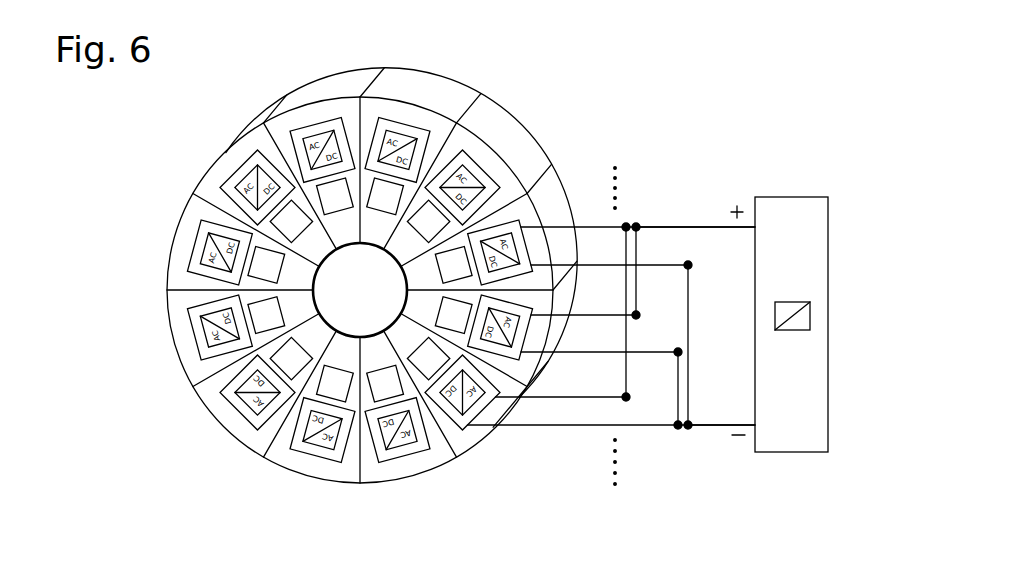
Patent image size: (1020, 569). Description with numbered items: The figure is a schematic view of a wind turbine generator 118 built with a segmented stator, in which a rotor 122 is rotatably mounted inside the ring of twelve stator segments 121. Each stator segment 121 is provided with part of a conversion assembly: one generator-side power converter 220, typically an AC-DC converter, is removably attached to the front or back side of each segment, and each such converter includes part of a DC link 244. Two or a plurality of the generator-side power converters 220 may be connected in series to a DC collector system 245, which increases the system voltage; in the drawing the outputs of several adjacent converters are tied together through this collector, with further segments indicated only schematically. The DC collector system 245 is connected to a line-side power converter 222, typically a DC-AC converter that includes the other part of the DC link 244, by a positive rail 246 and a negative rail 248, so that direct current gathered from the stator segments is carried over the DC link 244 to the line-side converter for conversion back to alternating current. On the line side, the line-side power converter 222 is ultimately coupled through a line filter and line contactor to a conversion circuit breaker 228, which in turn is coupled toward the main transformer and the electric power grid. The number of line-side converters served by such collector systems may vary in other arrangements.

The wind turbine generator 118 is at (140, 197).
The stator segments 121 is at (492, 52).
The rotor 122 is at (360, 290).
The generator-side power converter 220 is at (177, 350).
The line-side power converter 222 is at (787, 197).
The conversion circuit breaker 228 is at (320, 373).
The DC link 244 is at (568, 442).
The DC collector system 245 is at (634, 208).
The positive rail 246 is at (707, 226).
The negative rail 248 is at (718, 426).